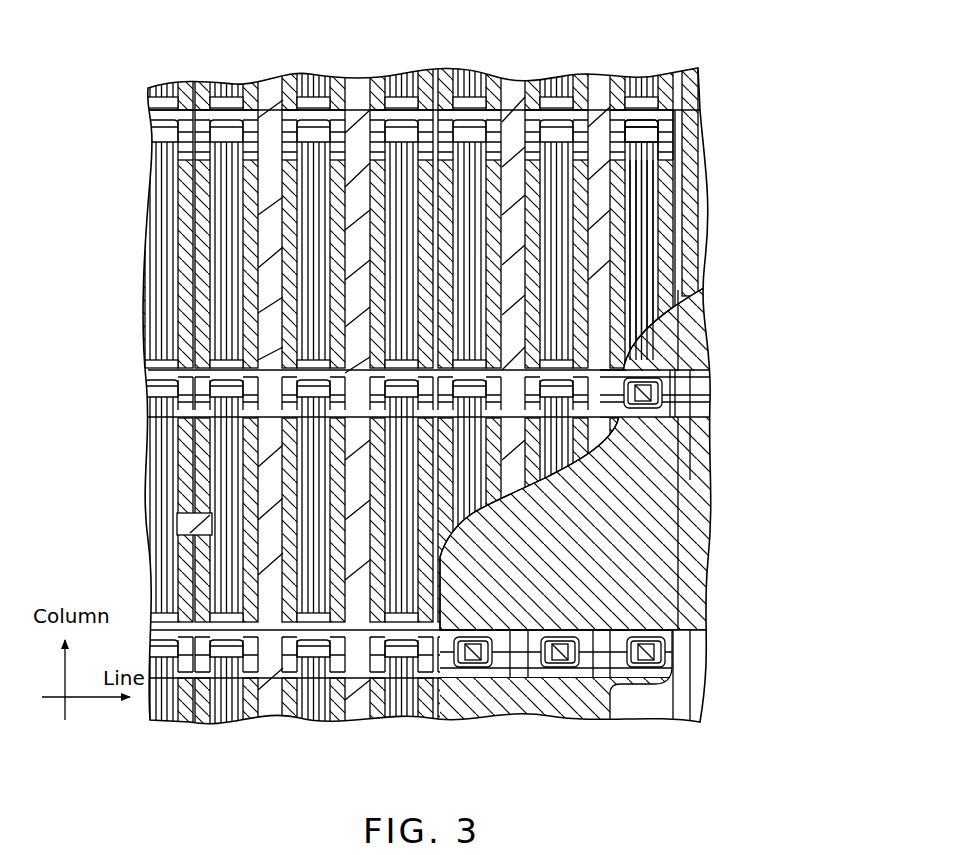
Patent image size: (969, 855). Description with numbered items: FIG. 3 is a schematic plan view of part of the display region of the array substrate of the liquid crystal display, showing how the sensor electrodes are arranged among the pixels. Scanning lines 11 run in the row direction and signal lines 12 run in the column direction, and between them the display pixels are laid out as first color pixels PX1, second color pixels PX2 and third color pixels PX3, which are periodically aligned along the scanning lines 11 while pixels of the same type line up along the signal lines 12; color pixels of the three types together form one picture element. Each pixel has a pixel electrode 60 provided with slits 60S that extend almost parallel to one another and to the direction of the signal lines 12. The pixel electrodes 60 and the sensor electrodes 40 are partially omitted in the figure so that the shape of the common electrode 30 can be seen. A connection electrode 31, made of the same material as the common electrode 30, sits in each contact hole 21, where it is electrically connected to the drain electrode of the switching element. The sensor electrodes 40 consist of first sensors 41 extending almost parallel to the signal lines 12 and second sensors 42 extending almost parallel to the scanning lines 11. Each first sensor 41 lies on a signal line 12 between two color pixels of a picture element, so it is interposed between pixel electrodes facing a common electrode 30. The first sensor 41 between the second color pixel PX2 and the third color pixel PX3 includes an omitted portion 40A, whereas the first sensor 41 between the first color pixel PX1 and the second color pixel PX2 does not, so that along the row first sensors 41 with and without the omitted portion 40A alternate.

The first color pixel PX1 is at (229, 79).
The second color pixel PX2 is at (313, 74).
The third color pixel PX3 is at (400, 71).
The scanning line 11 is at (662, 150).
The signal line 12 is at (677, 84).
The contact hole 21 is at (652, 378).
The common electrode 30 is at (648, 567).
The connection electrode 31 is at (650, 392).
The sensor electrode 40 is at (512, 99).
The omitted portion 40A is at (601, 380).
The first sensor 41 is at (357, 93).
The second sensor 42 is at (287, 262).
The pixel electrode 60 is at (652, 128).
The slit 60S is at (640, 187).